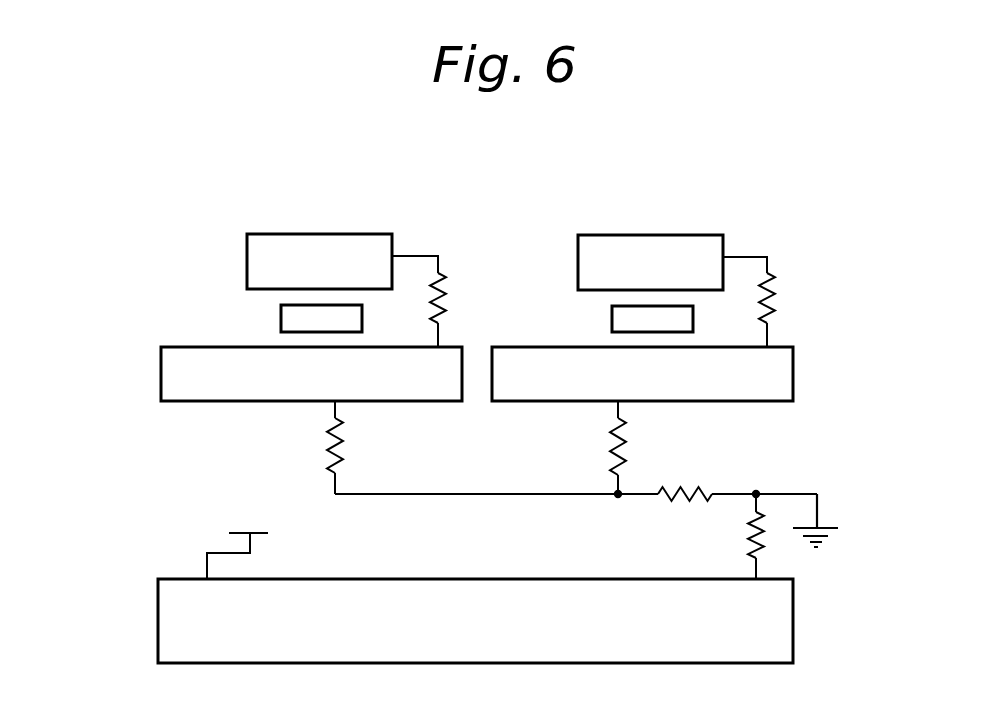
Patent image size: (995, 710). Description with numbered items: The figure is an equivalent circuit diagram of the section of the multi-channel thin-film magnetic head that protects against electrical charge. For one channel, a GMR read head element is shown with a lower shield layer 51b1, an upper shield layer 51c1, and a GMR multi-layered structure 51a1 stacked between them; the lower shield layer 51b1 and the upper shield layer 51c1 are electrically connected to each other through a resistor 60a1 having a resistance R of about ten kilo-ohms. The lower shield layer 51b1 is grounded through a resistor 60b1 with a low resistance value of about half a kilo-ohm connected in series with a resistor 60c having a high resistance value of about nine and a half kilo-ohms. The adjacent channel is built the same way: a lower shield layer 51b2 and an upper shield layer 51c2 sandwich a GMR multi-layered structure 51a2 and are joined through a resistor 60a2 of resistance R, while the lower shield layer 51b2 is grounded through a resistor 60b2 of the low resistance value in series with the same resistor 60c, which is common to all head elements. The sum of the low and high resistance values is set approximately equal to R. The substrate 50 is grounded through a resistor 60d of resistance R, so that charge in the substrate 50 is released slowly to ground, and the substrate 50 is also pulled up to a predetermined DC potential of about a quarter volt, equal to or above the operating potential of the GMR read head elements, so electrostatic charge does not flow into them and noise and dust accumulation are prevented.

The upper shield layer 51c2 is at (311, 247).
The GMR multi-layered structure 51a2 is at (292, 317).
The resistor 60a2 is at (443, 273).
The lower shield layer 51b2 is at (185, 381).
The resistor 60b2 is at (322, 448).
The upper shield layer 51c1 is at (643, 248).
The GMR multi-layered structure 51a1 is at (620, 318).
The resistor 60a1 is at (771, 273).
The lower shield layer 51b1 is at (778, 375).
The resistor 60b1 is at (607, 452).
The resistor 60c is at (690, 487).
The resistor 60d is at (760, 560).
The substrate 50 is at (770, 623).